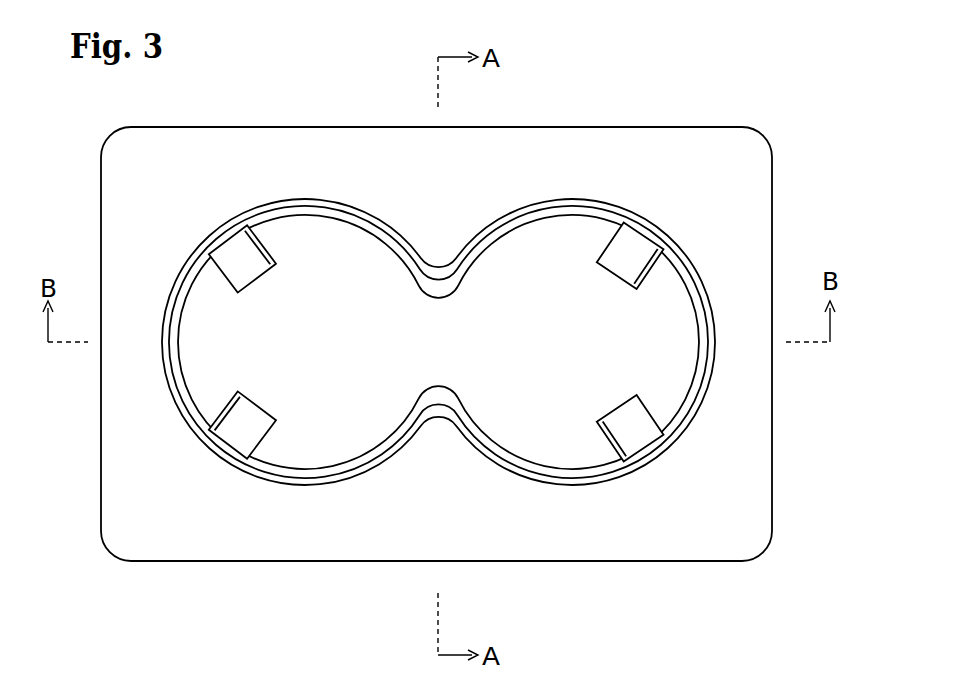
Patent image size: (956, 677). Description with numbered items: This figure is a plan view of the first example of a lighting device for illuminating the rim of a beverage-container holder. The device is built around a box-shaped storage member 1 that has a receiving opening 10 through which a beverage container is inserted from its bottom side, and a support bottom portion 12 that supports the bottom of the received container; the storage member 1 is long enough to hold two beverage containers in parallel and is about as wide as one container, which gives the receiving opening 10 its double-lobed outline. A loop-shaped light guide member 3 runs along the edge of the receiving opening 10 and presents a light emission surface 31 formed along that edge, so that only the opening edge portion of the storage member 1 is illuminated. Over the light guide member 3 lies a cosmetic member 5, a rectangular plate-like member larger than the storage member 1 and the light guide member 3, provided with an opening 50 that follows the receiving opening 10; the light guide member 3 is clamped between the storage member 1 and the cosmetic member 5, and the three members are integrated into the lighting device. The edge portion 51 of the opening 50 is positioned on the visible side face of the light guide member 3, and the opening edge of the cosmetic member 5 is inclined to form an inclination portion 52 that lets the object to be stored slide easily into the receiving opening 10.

The storage member 1 is at (553, 253).
The receiving opening 10 is at (505, 269).
The light guide member 3 is at (505, 284).
The light emission surface 31 is at (680, 273).
The support bottom portion 12 is at (517, 273).
The cosmetic member 5 is at (727, 512).
The opening 50 is at (657, 224).
The edge portion 51 is at (668, 235).
The inclination portion 52 is at (519, 266).